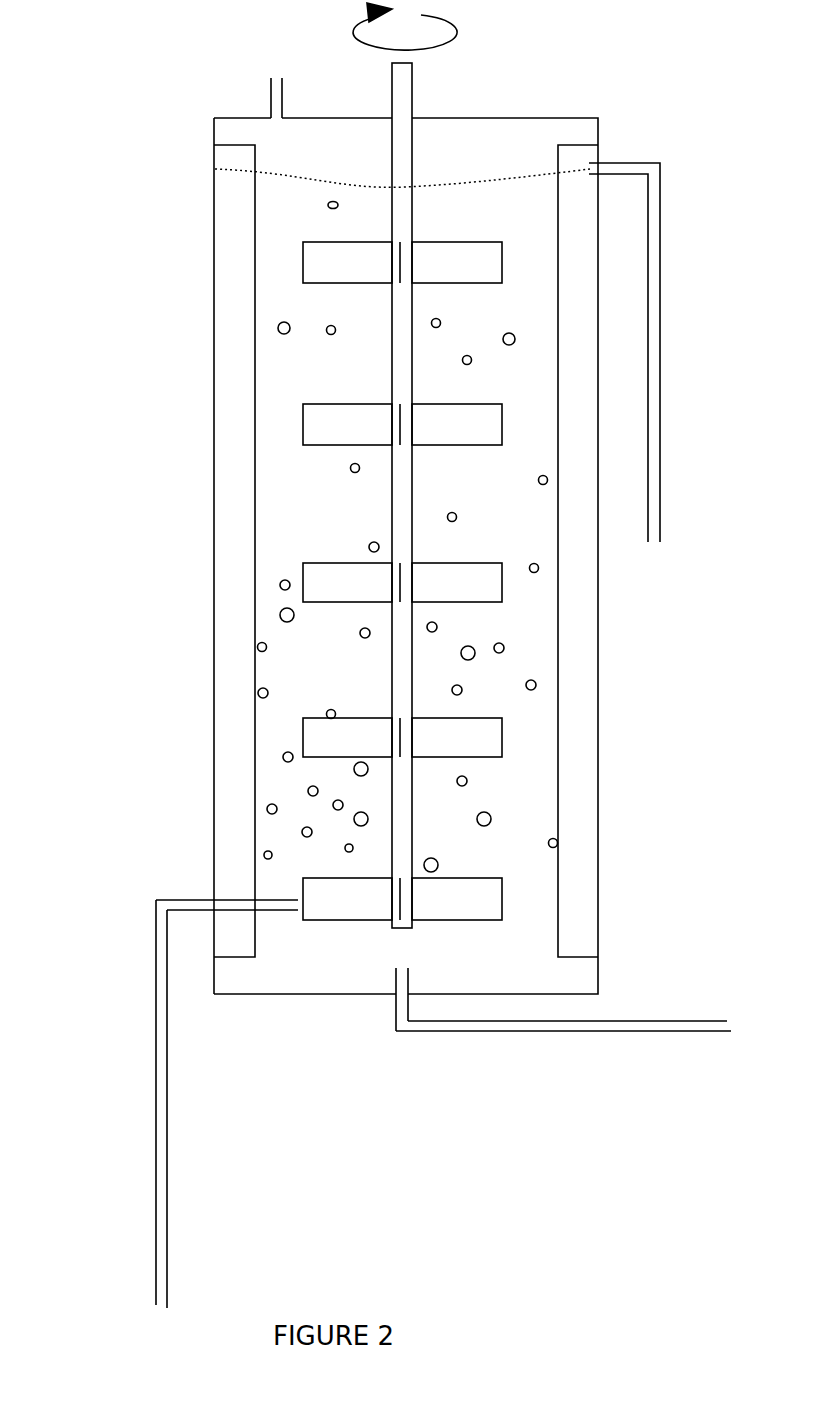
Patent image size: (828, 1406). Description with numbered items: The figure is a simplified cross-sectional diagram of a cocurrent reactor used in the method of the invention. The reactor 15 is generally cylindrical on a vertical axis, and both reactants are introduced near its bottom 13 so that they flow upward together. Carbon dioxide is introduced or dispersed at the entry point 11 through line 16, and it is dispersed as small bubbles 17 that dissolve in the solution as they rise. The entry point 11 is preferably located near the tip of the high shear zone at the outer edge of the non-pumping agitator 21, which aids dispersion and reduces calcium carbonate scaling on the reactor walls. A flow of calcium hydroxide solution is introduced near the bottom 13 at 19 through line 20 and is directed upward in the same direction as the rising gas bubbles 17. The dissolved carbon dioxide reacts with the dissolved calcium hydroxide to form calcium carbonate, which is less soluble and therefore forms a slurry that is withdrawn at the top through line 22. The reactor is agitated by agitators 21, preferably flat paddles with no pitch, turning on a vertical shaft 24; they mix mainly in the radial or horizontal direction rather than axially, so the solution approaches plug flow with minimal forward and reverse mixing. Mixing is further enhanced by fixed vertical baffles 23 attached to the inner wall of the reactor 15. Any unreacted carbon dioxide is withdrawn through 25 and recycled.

The carbon dioxide entry point 11 is at (300, 895).
The bottom 13 is at (258, 983).
The reactor 15 is at (160, 752).
The line 16 is at (148, 1195).
The bubbles 17 is at (275, 628).
The calcium hydroxide solution entry point 19 is at (387, 993).
The line 20 is at (557, 1035).
The agitator 21 is at (328, 262).
The line 22 is at (668, 367).
The vertical baffles 23 is at (237, 508).
The vertical shaft 24 is at (400, 81).
The unreacted carbon dioxide withdrawal 25 is at (265, 93).